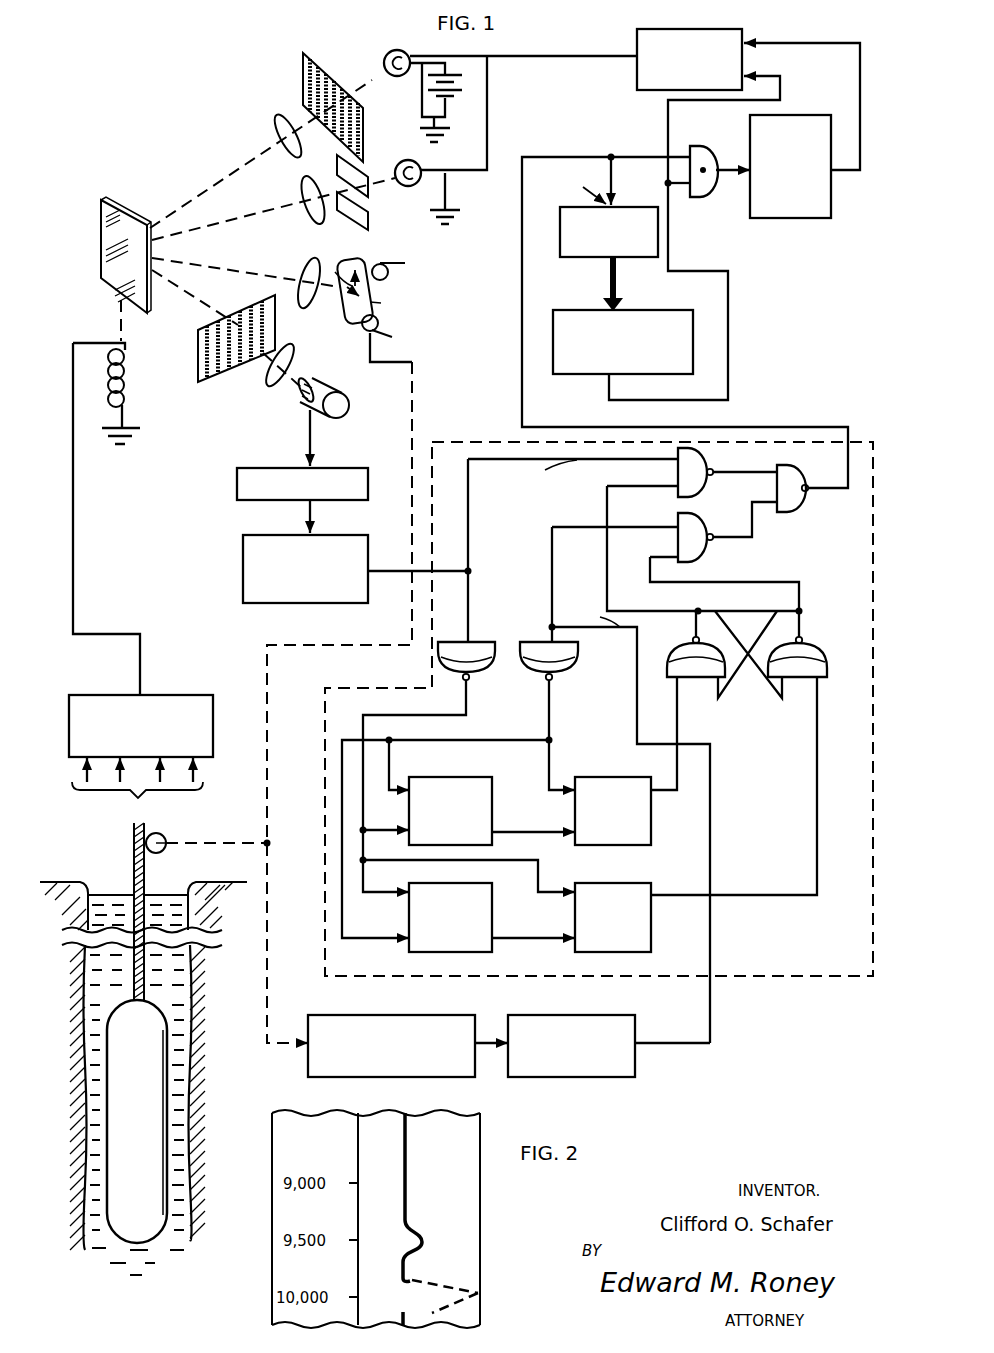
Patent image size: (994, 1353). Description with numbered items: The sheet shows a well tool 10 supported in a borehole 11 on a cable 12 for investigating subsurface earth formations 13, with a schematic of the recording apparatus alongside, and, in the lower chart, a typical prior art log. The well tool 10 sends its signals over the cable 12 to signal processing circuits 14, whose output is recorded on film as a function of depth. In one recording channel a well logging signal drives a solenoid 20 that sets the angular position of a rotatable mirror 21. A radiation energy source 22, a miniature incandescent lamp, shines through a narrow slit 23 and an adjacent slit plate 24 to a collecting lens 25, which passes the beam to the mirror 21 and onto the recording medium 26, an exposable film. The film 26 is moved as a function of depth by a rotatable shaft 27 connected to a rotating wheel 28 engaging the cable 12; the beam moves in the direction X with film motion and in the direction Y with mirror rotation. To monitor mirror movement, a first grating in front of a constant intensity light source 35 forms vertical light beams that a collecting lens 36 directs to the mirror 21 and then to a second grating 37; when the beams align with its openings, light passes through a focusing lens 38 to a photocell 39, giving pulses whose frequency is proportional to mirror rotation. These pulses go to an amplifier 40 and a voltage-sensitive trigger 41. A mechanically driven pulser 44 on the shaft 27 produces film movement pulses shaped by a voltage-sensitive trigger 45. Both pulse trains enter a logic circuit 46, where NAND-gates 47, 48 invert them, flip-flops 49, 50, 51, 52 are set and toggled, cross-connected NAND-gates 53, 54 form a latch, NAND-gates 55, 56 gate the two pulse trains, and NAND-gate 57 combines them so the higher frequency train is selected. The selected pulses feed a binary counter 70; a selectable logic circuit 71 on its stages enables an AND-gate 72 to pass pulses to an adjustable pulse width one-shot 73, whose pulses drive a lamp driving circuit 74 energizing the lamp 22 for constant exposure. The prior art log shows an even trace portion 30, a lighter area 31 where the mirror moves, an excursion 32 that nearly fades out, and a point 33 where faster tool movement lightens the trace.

In FIG. 1, the well tool 10 is at (125, 1112).
In FIG. 1, the borehole 11 is at (190, 922).
In FIG. 1, the cable 12 is at (134, 862).
In FIG. 1, the subsurface earth formations 13 is at (66, 997).
In FIG. 1, the signal processing circuits 14 is at (165, 697).
In FIG. 1, the solenoid 20 is at (130, 350).
In FIG. 1, the rotatable mirror 21 is at (105, 238).
In FIG. 1, the radiation energy source 22 is at (400, 163).
In FIG. 1, the narrow slit 23 is at (366, 205).
In FIG. 1, the slit plate 24 is at (362, 195).
In FIG. 1, the collecting lens 25 is at (305, 212).
In FIG. 1, the recording medium 26 is at (372, 258).
In FIG. 1, the rotatable shaft 27 is at (413, 400).
In FIG. 1, the rotating wheel 28 is at (163, 836).
In FIG. 2, the portion of the log 30 is at (410, 1153).
In FIG. 2, the area of the log 31 is at (410, 1228).
In FIG. 2, the excursion 32 is at (421, 1278).
In FIG. 2, the point on the log 33 is at (410, 1322).
In FIG. 1, the constant intensity light source 35 is at (303, 72).
In FIG. 1, the collecting lens 36 is at (276, 133).
In FIG. 1, the second grating 37 is at (392, 51).
In FIG. 1, the focusing lens 38 is at (268, 371).
In FIG. 1, the photocell 39 is at (301, 400).
In FIG. 1, the amplifier 40 is at (326, 470).
In FIG. 1, the voltage-sensitive trigger 41 is at (248, 537).
In FIG. 1, the mechanically driven pulser 44 is at (450, 1017).
In FIG. 1, the voltage-sensitive trigger 45 is at (598, 1017).
In FIG. 1, the logic circuit 46 is at (752, 977).
In FIG. 1, the NAND-gate 47 is at (474, 660).
In FIG. 1, the NAND-gate 48 is at (552, 660).
In FIG. 1, the flip-flop 49 is at (478, 807).
In FIG. 1, the flip-flop 50 is at (638, 818).
In FIG. 1, the flip-flop 51 is at (475, 918).
In FIG. 1, the flip-flop 52 is at (635, 924).
In FIG. 1, the NAND-gate 53 is at (704, 665).
In FIG. 1, the NAND-gate 54 is at (812, 667).
In FIG. 1, the NAND-gate 55 is at (697, 480).
In FIG. 1, the NAND-gate 56 is at (697, 552).
In FIG. 1, the NAND-gate 57 is at (792, 482).
In FIG. 1, the binary counter 70 is at (628, 208).
In FIG. 1, the selectable logic circuit 71 is at (600, 374).
In FIG. 1, the AND-gate 72 is at (708, 146).
In FIG. 1, the adjustable pulse width one-shot 73 is at (793, 118).
In FIG. 1, the lamp driving circuit 74 is at (637, 40).